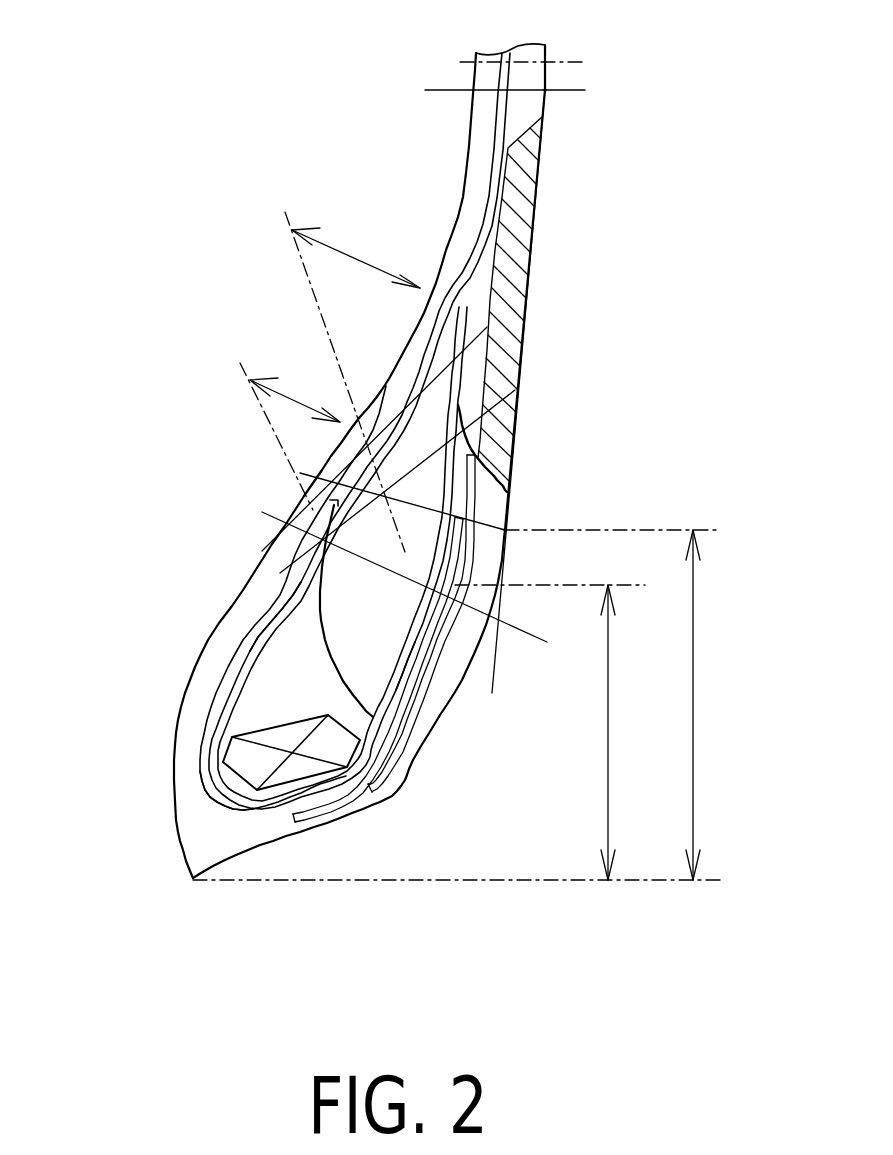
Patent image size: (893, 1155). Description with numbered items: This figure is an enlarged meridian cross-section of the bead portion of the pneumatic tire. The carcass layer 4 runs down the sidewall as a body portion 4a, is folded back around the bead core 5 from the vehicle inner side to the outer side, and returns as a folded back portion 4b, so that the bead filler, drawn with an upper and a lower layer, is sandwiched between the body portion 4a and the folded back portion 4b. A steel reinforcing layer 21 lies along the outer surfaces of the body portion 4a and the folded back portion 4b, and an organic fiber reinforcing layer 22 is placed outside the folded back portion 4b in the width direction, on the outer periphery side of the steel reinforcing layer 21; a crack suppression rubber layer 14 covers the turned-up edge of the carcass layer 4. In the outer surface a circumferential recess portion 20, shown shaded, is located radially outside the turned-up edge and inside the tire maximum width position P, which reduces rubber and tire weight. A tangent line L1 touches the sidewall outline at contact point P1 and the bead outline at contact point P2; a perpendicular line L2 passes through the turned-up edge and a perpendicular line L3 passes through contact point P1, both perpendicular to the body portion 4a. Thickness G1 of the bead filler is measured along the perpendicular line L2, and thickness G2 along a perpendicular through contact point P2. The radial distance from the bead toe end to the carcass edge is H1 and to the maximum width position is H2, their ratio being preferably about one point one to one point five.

The carcass layer 4 is at (488, 197).
The body portion 4a is at (257, 657).
The folded back portion 4b is at (410, 670).
The bead core 5 is at (280, 737).
The crack suppression rubber layer 14 is at (467, 442).
The recess portion 20 is at (503, 312).
The steel reinforcing layer 21 is at (222, 795).
The organic fiber reinforcing layer 22 is at (408, 717).
The tire maximum width position P is at (548, 58).
The contact point P1 is at (548, 92).
The contact point P2 is at (507, 530).
The tangent line L1 is at (530, 248).
The perpendicular line L2 is at (421, 495).
The perpendicular line L3 is at (486, 92).
The thickness of the bead filler G1 is at (292, 400).
The thickness of the bead filler G2 is at (352, 382).
The distance to the carcass edge H1 is at (553, 732).
The distance to the contact point H2 is at (466, 705).